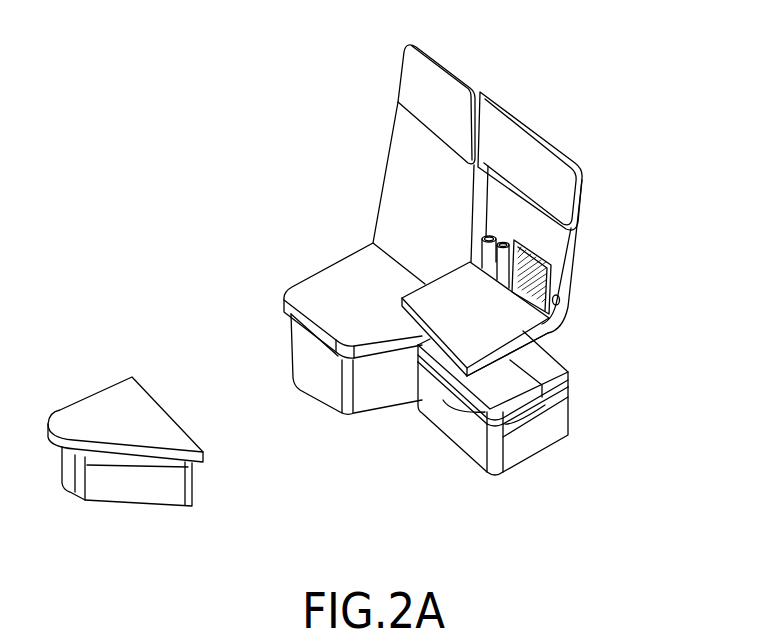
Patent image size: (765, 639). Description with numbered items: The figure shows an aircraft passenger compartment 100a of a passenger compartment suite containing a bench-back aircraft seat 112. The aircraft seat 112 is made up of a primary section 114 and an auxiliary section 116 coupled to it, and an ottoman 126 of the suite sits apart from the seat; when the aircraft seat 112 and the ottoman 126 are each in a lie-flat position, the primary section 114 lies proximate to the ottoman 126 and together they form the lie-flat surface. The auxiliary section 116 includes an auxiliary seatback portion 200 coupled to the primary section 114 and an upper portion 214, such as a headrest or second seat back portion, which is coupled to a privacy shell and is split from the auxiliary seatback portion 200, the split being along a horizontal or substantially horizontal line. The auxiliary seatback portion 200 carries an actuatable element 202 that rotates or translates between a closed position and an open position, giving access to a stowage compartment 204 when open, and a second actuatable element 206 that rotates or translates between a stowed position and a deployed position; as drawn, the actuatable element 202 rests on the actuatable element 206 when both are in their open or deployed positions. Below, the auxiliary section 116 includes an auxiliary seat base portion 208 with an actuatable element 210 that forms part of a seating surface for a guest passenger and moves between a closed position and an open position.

The aircraft passenger compartment 100a is at (188, 42).
The aircraft seat 112 is at (333, 202).
The primary section 114 is at (447, 222).
The auxiliary section 116 is at (545, 512).
The ottoman 126 is at (105, 402).
The auxiliary seatback portion 200 is at (622, 398).
The actuatable element 202 is at (507, 323).
The stowage compartment 204 is at (549, 244).
The actuatable element 206 is at (540, 338).
The auxiliary seat base portion 208 is at (552, 442).
The actuatable element 210 is at (488, 383).
The upper portion 214 is at (552, 195).